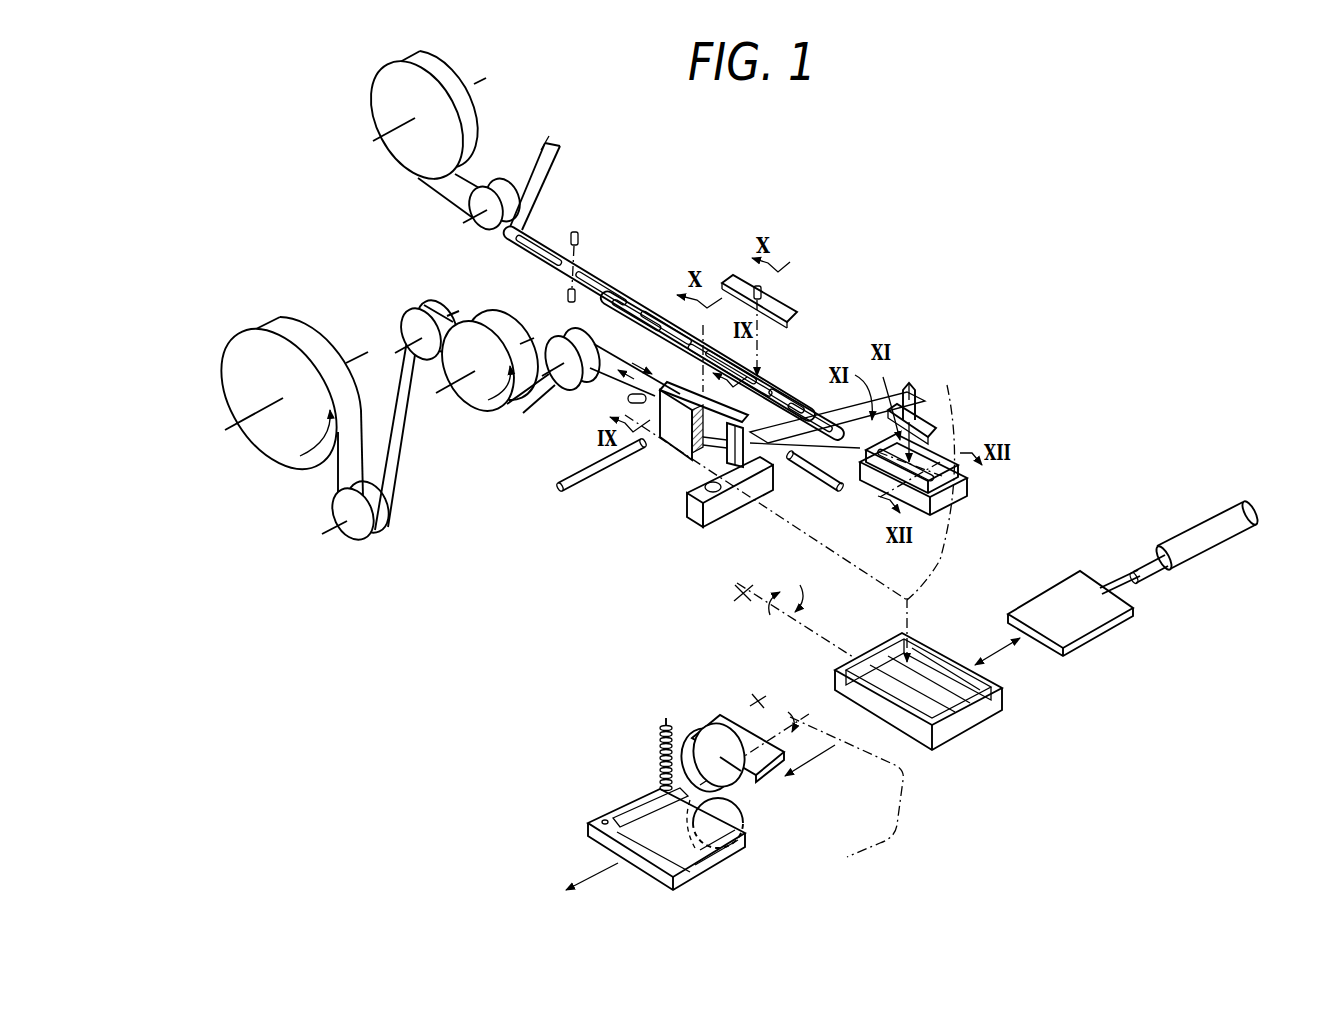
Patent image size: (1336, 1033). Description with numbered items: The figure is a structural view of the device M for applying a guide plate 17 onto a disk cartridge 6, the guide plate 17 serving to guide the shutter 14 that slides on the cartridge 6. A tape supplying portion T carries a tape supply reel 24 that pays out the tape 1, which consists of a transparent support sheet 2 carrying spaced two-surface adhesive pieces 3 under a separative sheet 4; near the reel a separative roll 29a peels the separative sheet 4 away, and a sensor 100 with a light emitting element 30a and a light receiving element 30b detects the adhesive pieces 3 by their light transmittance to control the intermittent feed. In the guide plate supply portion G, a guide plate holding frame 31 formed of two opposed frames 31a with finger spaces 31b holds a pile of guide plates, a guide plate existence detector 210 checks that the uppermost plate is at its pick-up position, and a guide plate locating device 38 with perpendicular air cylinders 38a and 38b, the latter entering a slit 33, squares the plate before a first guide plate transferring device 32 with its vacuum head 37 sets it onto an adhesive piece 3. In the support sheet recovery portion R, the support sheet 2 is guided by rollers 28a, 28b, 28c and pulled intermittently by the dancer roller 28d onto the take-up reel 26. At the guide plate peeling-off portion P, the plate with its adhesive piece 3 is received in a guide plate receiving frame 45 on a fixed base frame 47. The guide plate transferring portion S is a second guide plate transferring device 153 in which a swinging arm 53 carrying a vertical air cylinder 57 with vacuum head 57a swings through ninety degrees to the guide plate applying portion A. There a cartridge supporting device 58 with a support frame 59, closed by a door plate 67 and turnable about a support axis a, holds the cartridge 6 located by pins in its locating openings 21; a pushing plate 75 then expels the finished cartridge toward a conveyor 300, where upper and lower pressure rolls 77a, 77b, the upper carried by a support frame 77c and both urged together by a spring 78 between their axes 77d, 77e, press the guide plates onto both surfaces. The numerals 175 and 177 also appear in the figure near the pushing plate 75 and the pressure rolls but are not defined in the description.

The tape 1 is at (427, 191).
The support sheet 2 is at (398, 425).
The two-surface adhesive piece 3 is at (538, 231).
The separative sheet 4 is at (561, 143).
The disk cartridge 6 is at (947, 683).
The shutter 14 is at (713, 855).
The guide plate 17 is at (672, 390).
The locating openings 21 is at (913, 647).
The tape supply reel 24 is at (375, 89).
The take-up reel 26 is at (238, 332).
The roller 28a is at (571, 338).
The roller 28b is at (482, 414).
The roller 28c is at (406, 324).
The dancer roller 28d is at (375, 541).
The separative roll 29a is at (486, 228).
The light emitting element 30a is at (577, 232).
The light receiving element 30b is at (569, 295).
The guide plate holding frame 31 is at (660, 390).
The frames 31a is at (770, 385).
The spaces 31b is at (683, 470).
The first guide plate transferring device 32 is at (788, 263).
The slit 33 is at (703, 513).
The vacuum head 37 is at (787, 310).
The guide plate locating device 38 is at (557, 493).
The air cylinder 38a is at (600, 477).
The air cylinder 38b is at (813, 483).
The guide plate receiving frame 45 is at (943, 440).
The fixed base frame 47 is at (965, 497).
The swinging arm 53 is at (760, 493).
The vertical air cylinder 57 is at (918, 385).
The vacuum head 57a is at (937, 413).
The cartridge supporting device 58 is at (880, 722).
The support frame 59 is at (973, 672).
The door plate 67 is at (977, 722).
The pushing plate 75 is at (1107, 628).
The upper pressure roll 77a is at (707, 723).
The lower pressure roll 77b is at (743, 820).
The support frame 77c is at (752, 712).
The axis 77d is at (667, 722).
The axis 77e is at (647, 783).
The spring 78 is at (660, 752).
The sensor 100 is at (562, 287).
The second guide plate transferring device 153 is at (750, 590).
The cylinder 175 is at (1212, 543).
The assembly 177 is at (615, 697).
The guide plate existence detector 210 is at (624, 402).
The conveyor 300 is at (900, 773).
The guide plate applying portion A is at (940, 792).
The guide plate supply portion G is at (640, 545).
The device M is at (1027, 300).
The guide plate peeling-off portion P is at (1042, 437).
The support sheet recovery portion R is at (310, 497).
The guide plate transferring portion S is at (838, 568).
The tape supplying portion T is at (357, 181).
The support axis a is at (827, 650).